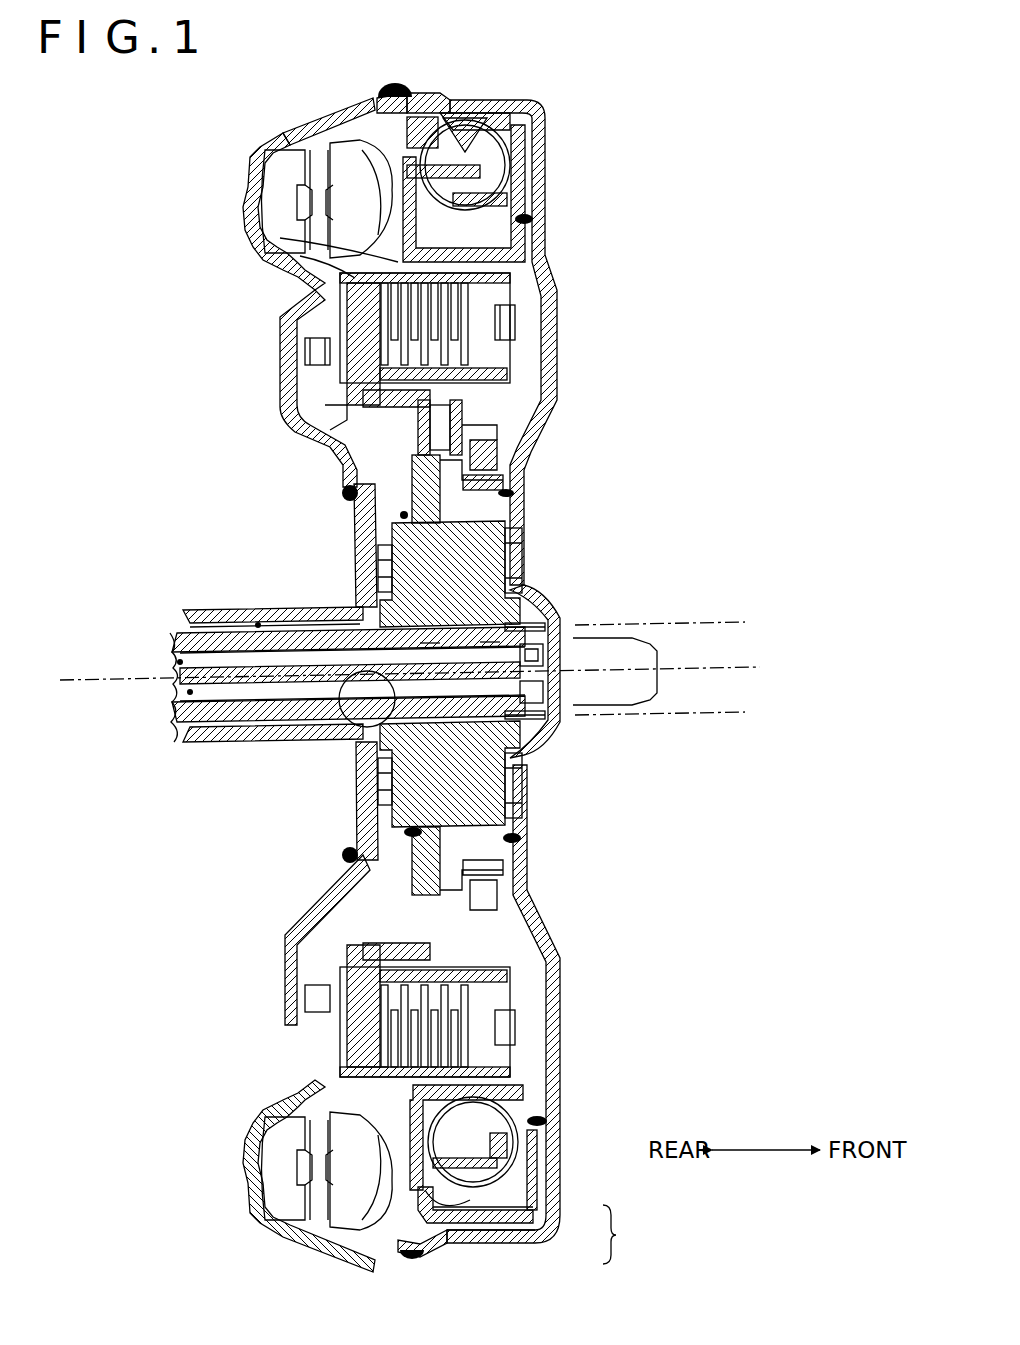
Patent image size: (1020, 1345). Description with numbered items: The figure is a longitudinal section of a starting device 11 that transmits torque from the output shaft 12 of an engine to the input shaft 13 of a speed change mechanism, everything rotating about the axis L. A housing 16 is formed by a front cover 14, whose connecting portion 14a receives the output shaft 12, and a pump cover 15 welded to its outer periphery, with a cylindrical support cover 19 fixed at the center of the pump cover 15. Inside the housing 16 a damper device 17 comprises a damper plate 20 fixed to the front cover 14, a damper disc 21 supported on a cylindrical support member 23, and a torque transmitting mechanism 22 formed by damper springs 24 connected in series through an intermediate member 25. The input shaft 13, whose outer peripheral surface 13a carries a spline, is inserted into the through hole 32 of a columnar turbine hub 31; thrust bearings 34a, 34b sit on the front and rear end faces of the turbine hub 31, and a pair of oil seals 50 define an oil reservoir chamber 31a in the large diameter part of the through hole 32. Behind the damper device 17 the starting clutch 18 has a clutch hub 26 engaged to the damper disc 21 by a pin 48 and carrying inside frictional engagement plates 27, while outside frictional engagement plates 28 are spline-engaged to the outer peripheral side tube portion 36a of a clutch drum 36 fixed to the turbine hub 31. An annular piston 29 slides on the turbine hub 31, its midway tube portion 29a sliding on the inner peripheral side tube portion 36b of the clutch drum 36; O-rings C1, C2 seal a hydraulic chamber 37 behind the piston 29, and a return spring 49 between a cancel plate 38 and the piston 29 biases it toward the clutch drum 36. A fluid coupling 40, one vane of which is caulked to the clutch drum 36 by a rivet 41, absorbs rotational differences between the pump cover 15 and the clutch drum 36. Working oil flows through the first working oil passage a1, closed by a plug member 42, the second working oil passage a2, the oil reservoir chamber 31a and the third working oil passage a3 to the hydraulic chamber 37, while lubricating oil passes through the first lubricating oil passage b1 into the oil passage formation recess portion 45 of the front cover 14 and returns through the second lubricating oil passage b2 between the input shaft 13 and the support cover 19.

The starting device 11 is at (715, 98).
The output shaft 12 is at (699, 623).
The input shaft 13 is at (185, 643).
The outer peripheral surface 13a is at (207, 612).
The front cover 14 is at (448, 96).
The connecting portion 14a is at (655, 657).
The pump cover 15 is at (373, 100).
The housing 16 is at (465, 53).
The damper device 17 is at (512, 224).
The starting clutch 18 is at (497, 305).
The support cover 19 is at (303, 613).
The damper plate 20 is at (556, 1183).
The damper disc 21 is at (526, 1037).
The torque transmitting mechanism 22 is at (627, 1234).
The support member 23 is at (521, 490).
The damper springs 24 is at (548, 1208).
The intermediate member 25 is at (500, 1255).
The clutch hub 26 is at (484, 380).
The inside frictional engagement plates 27 is at (502, 418).
The outside frictional engagement plates 28 is at (300, 240).
The piston 29 is at (357, 388).
The midway tube portion 29a is at (344, 493).
The turbine hub 31 is at (382, 782).
The oil reservoir chamber 31a is at (535, 762).
The through hole 32 is at (350, 728).
The first thrust bearing 34a is at (521, 570).
The second thrust bearing 34b is at (383, 560).
The clutch drum 36 is at (322, 306).
The outer peripheral side tube portion 36a is at (292, 272).
The inner peripheral side tube portion 36b is at (330, 434).
The hydraulic chamber 37 is at (372, 520).
The cancel plate 38 is at (521, 461).
The fluid coupling 40 is at (320, 146).
The rivet 41 is at (318, 352).
The plug member 42 is at (546, 657).
The oil passage formation recess portion 45 is at (572, 718).
The pin 48 is at (512, 342).
The return spring 49 is at (522, 437).
The oil seals 50 is at (546, 610).
The first working oil passage a1 is at (177, 662).
The second working oil passage a2 is at (483, 645).
The third working oil passage a3 is at (418, 645).
The first lubricating oil passage b1 is at (187, 692).
The second lubricating oil passage b2 is at (257, 622).
The O-ring C1 is at (347, 424).
The O-ring C2 is at (523, 540).
The axis L is at (757, 668).